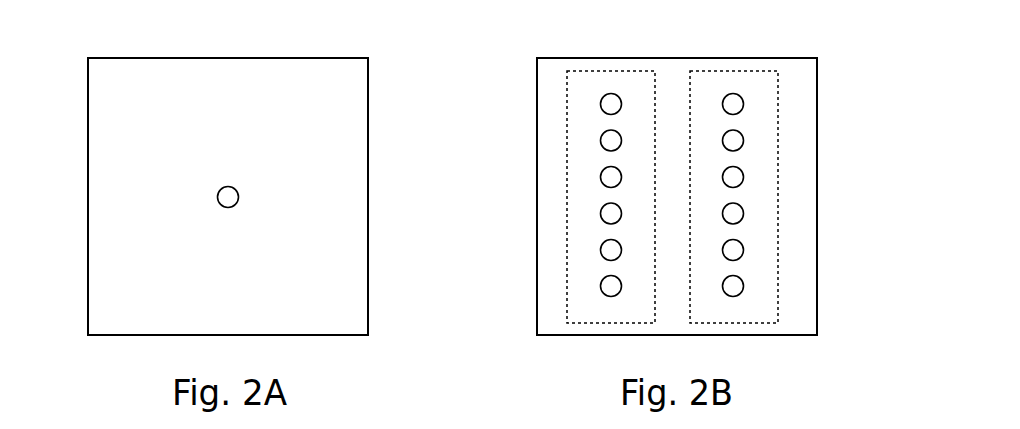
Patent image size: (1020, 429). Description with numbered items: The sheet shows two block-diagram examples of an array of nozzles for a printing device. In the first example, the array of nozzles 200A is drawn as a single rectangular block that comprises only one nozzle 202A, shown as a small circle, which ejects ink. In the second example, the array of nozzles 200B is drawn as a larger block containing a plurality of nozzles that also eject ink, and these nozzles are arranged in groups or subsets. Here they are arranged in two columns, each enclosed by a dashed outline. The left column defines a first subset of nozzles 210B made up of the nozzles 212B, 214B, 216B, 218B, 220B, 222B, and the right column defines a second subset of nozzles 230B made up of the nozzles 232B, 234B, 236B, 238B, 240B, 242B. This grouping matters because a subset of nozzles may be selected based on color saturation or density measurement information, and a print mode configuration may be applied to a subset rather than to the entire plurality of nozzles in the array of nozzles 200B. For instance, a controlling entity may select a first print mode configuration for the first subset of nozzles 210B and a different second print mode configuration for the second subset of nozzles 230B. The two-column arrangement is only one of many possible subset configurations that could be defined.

In FIG. 2A, the array of nozzles 200A is at (228, 58).
In FIG. 2A, the nozzle 202A is at (218, 195).
In FIG. 2B, the array of nozzles 200B is at (673, 58).
In FIG. 2B, the first subset of nozzles 210B is at (612, 71).
In FIG. 2B, the second subset of nozzles 230B is at (743, 71).
In FIG. 2B, the nozzle 212B is at (600, 100).
In FIG. 2B, the nozzle 214B is at (600, 136).
In FIG. 2B, the nozzle 216B is at (600, 173).
In FIG. 2B, the nozzle 218B is at (600, 210).
In FIG. 2B, the nozzle 220B is at (600, 246).
In FIG. 2B, the nozzle 222B is at (600, 282).
In FIG. 2B, the nozzle 232B is at (744, 105).
In FIG. 2B, the nozzle 234B is at (744, 142).
In FIG. 2B, the nozzle 236B is at (744, 178).
In FIG. 2B, the nozzle 238B is at (744, 214).
In FIG. 2B, the nozzle 240B is at (744, 251).
In FIG. 2B, the nozzle 242B is at (744, 287).